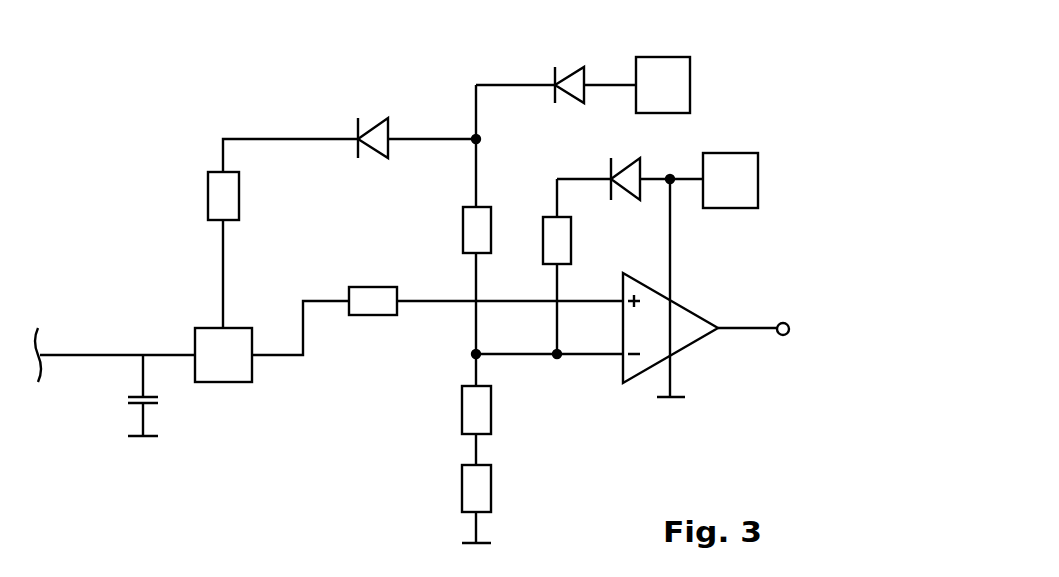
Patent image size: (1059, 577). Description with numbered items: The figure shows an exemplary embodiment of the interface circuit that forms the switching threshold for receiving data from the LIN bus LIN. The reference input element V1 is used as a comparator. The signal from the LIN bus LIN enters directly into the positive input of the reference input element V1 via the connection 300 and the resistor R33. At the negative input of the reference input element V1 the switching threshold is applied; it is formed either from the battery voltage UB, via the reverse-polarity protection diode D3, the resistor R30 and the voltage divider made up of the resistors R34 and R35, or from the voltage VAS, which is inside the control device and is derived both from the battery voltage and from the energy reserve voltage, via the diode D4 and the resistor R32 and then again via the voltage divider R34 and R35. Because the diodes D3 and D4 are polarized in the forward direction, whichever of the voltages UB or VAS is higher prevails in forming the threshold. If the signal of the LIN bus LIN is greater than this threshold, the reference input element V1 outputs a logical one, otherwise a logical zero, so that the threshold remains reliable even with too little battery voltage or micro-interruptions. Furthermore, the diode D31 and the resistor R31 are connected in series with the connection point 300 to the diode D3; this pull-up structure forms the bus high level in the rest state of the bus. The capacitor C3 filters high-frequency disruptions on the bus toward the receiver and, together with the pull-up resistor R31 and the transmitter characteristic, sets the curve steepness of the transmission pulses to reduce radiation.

The LIN bus LIN is at (106, 352).
The capacitor C3 is at (136, 405).
The connection 300 is at (223, 385).
The resistor R31 is at (239, 196).
The diode D31 is at (372, 118).
The resistor R30 is at (463, 230).
The resistor R33 is at (372, 318).
The voltage divider resistor R34 is at (462, 405).
The voltage divider resistor R35 is at (462, 486).
The reverse-polarity protection diode D3 is at (570, 100).
The battery voltage UB is at (688, 78).
The diode D4 is at (622, 158).
The voltage VAS is at (728, 208).
The resistor R32 is at (571, 240).
The reference input element V1 is at (690, 350).